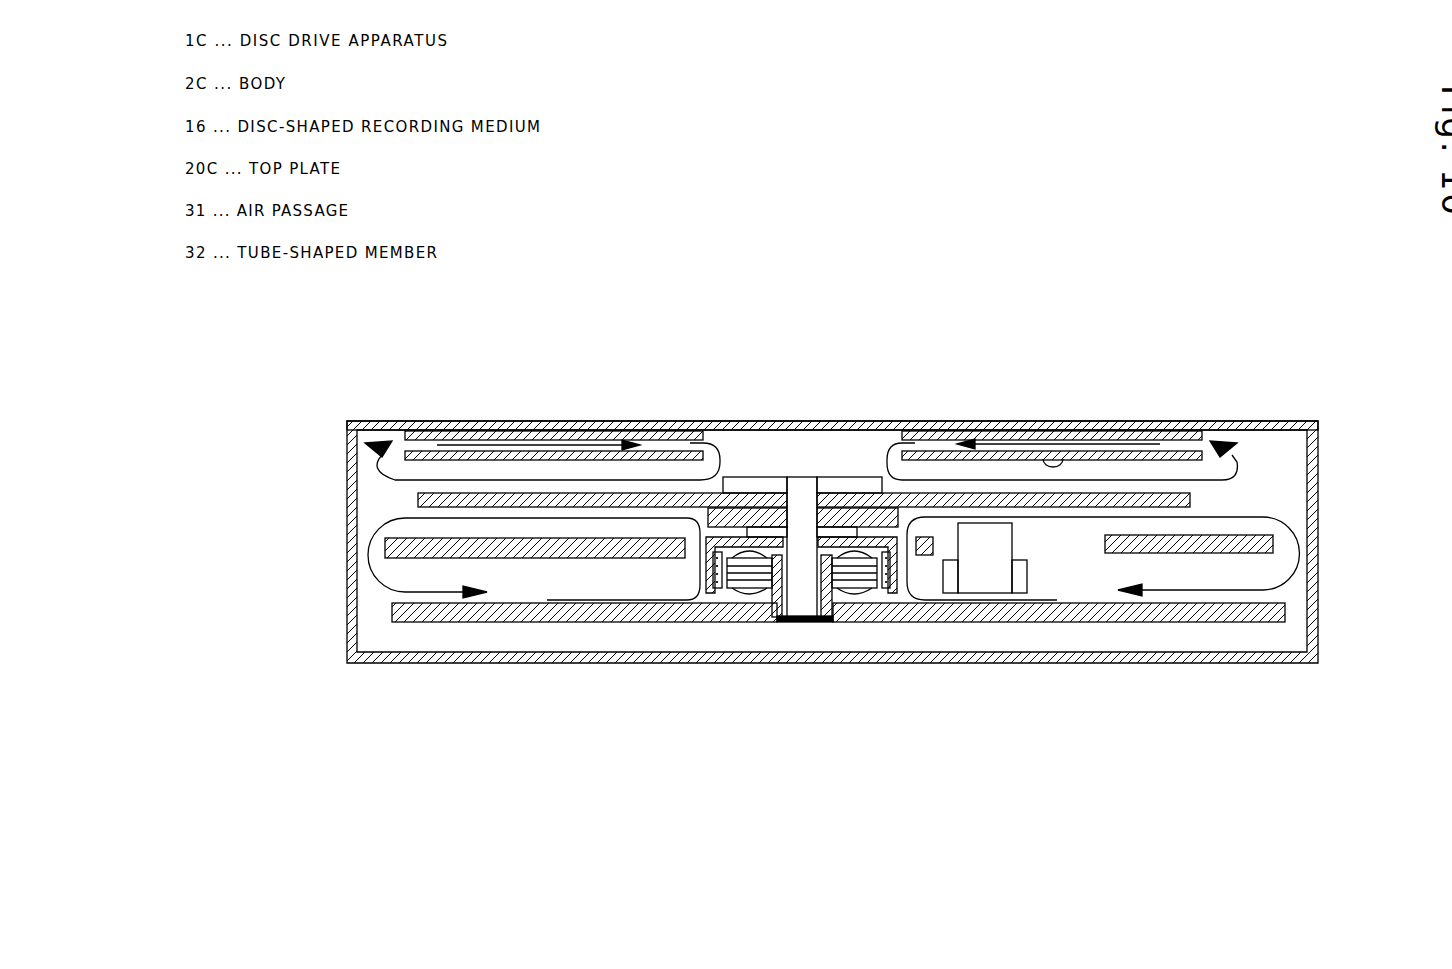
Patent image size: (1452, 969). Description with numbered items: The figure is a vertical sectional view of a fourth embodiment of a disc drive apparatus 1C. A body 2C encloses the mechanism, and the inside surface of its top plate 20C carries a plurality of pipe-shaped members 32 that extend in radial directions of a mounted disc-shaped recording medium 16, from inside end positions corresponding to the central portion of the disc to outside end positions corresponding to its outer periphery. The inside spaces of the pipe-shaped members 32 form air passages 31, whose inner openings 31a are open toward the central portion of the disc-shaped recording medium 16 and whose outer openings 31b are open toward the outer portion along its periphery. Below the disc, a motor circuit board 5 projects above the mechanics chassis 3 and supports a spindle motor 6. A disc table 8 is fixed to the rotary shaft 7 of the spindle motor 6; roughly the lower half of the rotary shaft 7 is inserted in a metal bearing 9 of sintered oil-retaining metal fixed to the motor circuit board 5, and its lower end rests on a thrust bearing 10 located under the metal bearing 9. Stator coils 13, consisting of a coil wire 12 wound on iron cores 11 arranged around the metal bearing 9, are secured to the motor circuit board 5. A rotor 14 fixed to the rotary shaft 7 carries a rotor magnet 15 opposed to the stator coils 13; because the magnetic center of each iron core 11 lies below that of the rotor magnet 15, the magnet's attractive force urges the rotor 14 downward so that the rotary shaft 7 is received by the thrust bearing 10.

The disc drive apparatus 1C is at (863, 312).
The body 2C is at (418, 665).
The mechanics chassis 3 is at (503, 552).
The motor circuit board 5 is at (1177, 621).
The spindle motor 6 is at (865, 662).
The rotary shaft 7 is at (803, 614).
The disc table 8 is at (847, 512).
The metal bearing 9 is at (758, 598).
The thrust bearing 10 is at (815, 613).
The iron core 11 is at (845, 600).
The coil wire 12 is at (873, 600).
The stator coil 13 is at (718, 593).
The rotor 14 is at (770, 530).
The rotor magnet 15 is at (712, 600).
The disc-shaped recording medium 16 is at (983, 495).
The top plate 20C is at (745, 421).
The air passage 31 is at (645, 444).
The inner opening 31a is at (722, 432).
The outer opening 31b is at (398, 422).
The pipe-shaped member 32 is at (508, 438).